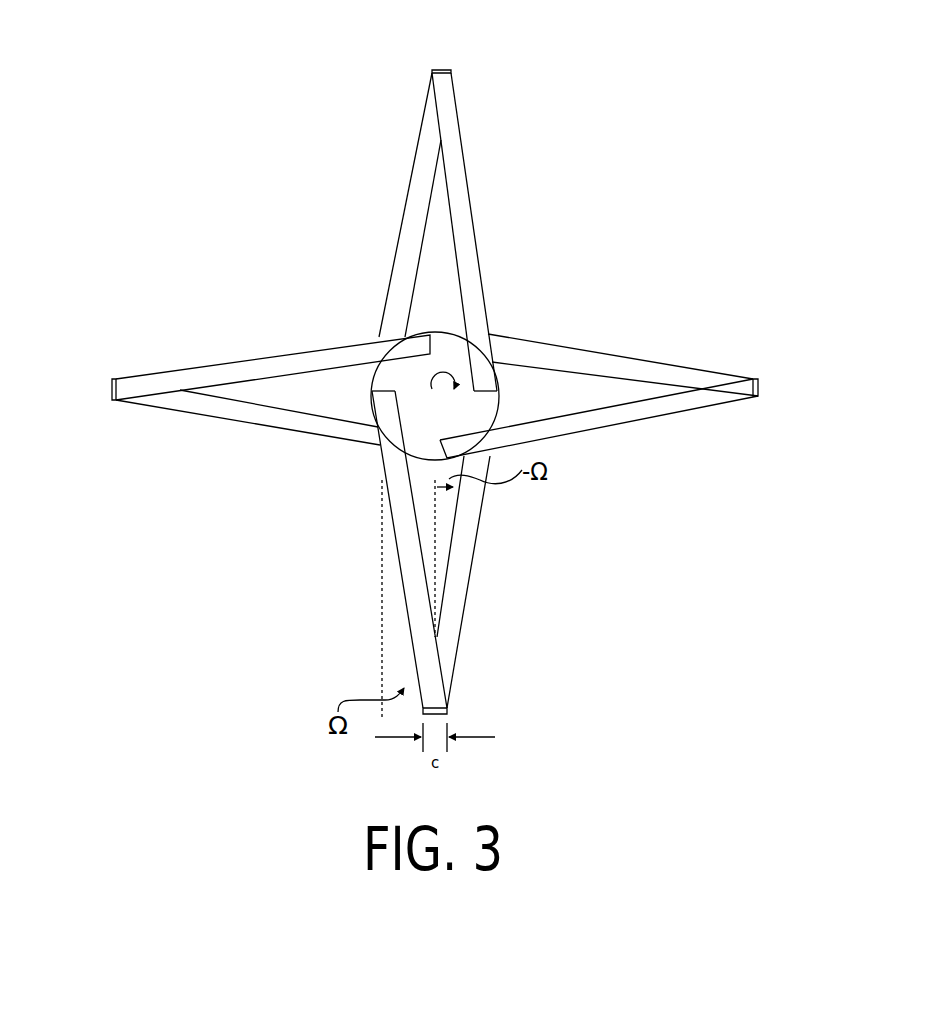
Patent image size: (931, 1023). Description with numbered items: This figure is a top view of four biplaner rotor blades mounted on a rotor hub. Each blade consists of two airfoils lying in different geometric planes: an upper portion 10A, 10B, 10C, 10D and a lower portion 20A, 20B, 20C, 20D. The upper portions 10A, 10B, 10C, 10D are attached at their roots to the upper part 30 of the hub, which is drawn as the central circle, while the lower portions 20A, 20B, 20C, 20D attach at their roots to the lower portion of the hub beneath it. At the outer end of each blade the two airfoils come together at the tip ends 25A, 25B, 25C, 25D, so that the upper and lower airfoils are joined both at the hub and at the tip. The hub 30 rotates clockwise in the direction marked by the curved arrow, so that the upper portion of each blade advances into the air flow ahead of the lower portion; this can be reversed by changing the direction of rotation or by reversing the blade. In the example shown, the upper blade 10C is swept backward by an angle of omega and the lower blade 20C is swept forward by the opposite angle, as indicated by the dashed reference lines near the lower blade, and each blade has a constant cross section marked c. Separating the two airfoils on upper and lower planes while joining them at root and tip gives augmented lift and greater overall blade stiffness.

The upper portion of blade 10A is at (467, 214).
The upper portion of blade 10B is at (631, 388).
The upper portion of blade 10C is at (445, 566).
The upper portion of blade 10D is at (241, 376).
The lower portion of blade 20A is at (425, 214).
The lower portion of blade 20B is at (631, 375).
The lower portion of blade 20C is at (445, 566).
The lower portion of blade 20D is at (241, 399).
The tip end 25A is at (441, 68).
The tip end 25B is at (760, 381).
The tip end 25C is at (434, 713).
The tip end 25D is at (108, 386).
The upper part of hub 30 is at (478, 402).